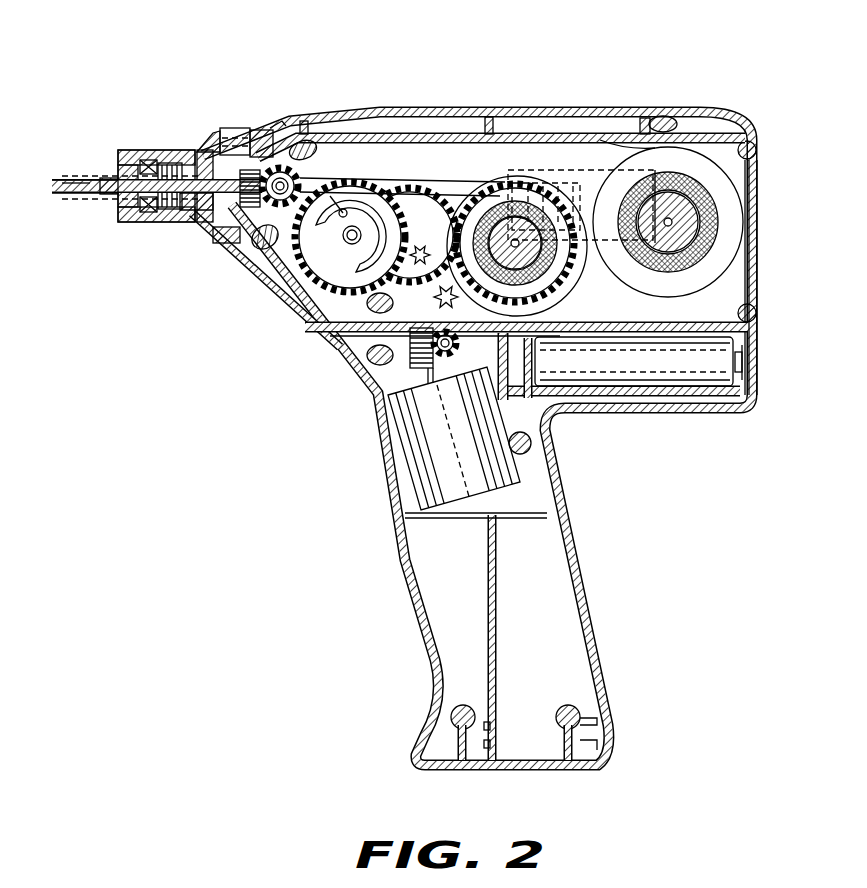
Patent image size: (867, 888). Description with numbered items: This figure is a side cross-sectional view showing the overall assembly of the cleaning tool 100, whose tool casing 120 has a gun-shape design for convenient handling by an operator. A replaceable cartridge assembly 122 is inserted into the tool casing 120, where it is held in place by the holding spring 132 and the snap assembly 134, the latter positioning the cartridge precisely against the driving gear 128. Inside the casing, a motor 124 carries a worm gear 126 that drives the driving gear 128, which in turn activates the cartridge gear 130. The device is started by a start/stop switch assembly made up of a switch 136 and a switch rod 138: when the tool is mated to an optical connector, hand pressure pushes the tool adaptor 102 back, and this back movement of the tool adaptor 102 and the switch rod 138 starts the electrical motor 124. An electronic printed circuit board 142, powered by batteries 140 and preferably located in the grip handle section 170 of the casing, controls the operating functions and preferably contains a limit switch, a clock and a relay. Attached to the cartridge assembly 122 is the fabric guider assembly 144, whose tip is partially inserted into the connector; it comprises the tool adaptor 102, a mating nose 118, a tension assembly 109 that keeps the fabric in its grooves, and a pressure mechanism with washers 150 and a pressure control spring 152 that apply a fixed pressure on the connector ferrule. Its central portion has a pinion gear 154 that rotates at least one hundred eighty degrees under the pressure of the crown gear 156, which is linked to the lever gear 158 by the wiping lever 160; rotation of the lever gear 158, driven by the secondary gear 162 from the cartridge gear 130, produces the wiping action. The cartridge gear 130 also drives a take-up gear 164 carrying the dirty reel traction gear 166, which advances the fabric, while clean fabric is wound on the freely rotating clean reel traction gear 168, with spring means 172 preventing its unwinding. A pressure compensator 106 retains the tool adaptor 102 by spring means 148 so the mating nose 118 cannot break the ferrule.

The cleaning tool 100 is at (772, 257).
The tool adaptor 102 is at (90, 177).
The pressure compensator 106 is at (161, 137).
The tension assembly 109 is at (197, 213).
The mating nose 118 is at (52, 196).
The tool casing 120 is at (398, 107).
The cartridge assembly 122 is at (757, 160).
The motor 124 is at (388, 467).
The worm gear 126 is at (390, 398).
The driving gear 128 is at (458, 352).
The cartridge gear 130 is at (340, 345).
The holding spring 132 is at (262, 208).
The snap assembly 134 is at (597, 170).
The switch 136 is at (230, 128).
The switch rod 138 is at (188, 152).
The batteries 140 is at (745, 382).
The electronic printed circuit board 142 is at (493, 590).
The fabric guider assembly 144 is at (104, 153).
The spring means 148 is at (88, 175).
The washers 150 is at (195, 205).
The pressure control spring 152 is at (212, 157).
The pinion gear 154 is at (220, 243).
The crown gear 156 is at (282, 112).
The lever gear 158 is at (297, 292).
The wiping lever 160 is at (330, 172).
The secondary gear 162 is at (430, 213).
The take-up gear 164 is at (490, 185).
The dirty reel traction gear 166 is at (565, 295).
The clean reel traction gear 168 is at (698, 163).
The grip handle section 170 is at (400, 573).
The spring means 172 is at (623, 150).